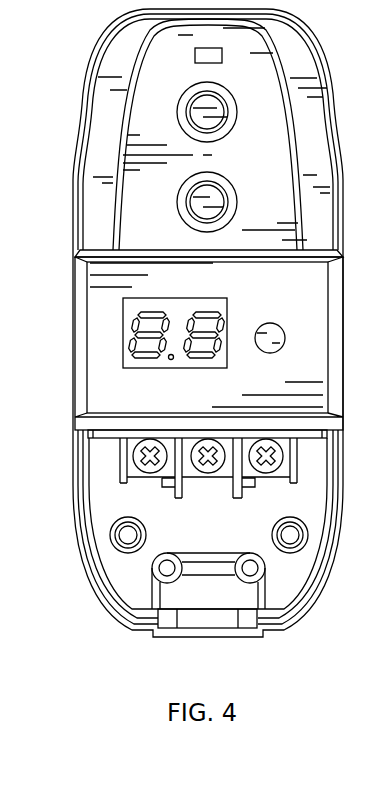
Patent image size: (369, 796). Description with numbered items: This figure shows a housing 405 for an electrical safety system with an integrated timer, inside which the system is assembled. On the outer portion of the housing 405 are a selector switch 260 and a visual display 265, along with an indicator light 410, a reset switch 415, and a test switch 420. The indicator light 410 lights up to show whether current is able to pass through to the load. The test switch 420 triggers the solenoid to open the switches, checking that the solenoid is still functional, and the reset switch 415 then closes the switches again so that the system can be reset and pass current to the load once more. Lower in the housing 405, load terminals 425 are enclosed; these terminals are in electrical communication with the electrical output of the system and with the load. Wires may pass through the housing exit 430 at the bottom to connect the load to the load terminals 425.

The housing 405 is at (74, 151).
The indicator light 410 is at (195, 56).
The reset switch 415 is at (237, 112).
The test switch 420 is at (237, 202).
The visual display 265 is at (180, 308).
The selector switch 260 is at (270, 324).
The load terminals 425 is at (221, 473).
The housing exit 430 is at (202, 624).